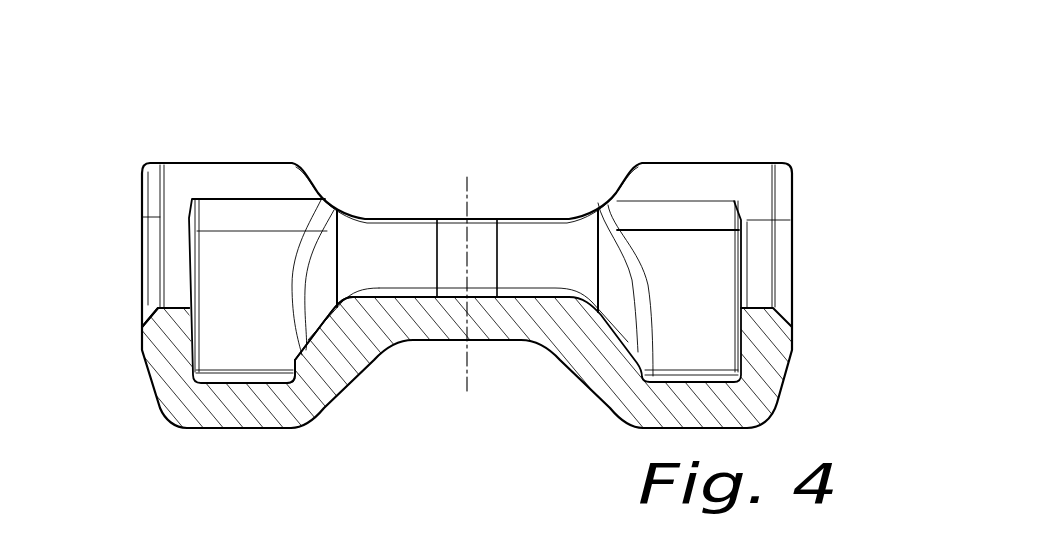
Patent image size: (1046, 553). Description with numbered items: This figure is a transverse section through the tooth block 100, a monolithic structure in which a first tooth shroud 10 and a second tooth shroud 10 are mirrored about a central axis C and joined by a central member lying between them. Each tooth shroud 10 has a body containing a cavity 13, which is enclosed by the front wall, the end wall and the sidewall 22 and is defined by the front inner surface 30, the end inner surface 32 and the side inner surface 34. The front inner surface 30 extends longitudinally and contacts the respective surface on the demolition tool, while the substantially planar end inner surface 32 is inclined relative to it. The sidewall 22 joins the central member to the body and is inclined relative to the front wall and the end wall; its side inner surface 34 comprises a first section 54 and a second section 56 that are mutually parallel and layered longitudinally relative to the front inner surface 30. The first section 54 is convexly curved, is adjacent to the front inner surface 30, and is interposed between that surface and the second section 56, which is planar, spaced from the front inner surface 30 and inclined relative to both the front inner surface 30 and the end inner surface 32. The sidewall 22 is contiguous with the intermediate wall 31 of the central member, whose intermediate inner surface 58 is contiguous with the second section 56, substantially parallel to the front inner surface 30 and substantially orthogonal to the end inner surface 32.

The tooth block 100 is at (647, 91).
The tooth shroud 10 is at (305, 152).
The cavity 13 is at (228, 250).
The intermediate inner surface 58 is at (405, 290).
The center axis C is at (467, 197).
The second section 56 is at (327, 323).
The end inner surface 32 is at (144, 345).
The side inner surface 34 is at (334, 329).
The sidewall 22 is at (337, 362).
The intermediate wall 31 is at (442, 327).
The front inner surface 30 is at (258, 386).
The first section 54 is at (284, 345).